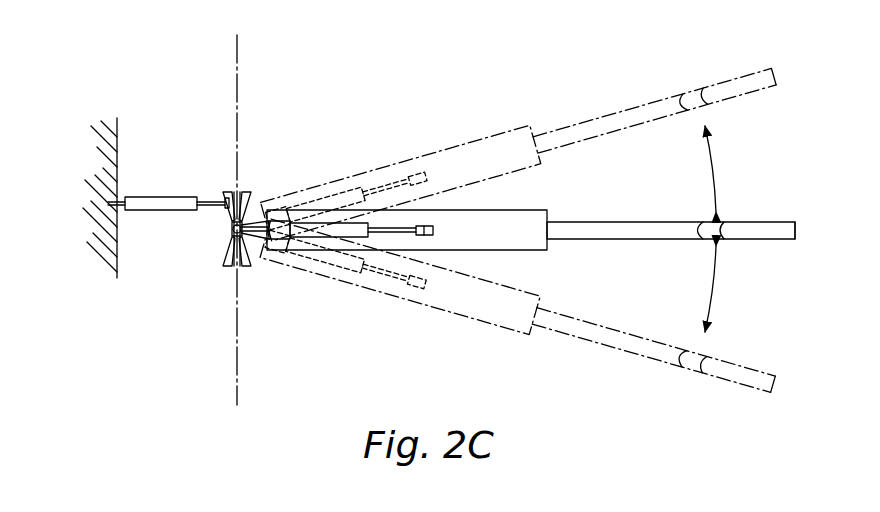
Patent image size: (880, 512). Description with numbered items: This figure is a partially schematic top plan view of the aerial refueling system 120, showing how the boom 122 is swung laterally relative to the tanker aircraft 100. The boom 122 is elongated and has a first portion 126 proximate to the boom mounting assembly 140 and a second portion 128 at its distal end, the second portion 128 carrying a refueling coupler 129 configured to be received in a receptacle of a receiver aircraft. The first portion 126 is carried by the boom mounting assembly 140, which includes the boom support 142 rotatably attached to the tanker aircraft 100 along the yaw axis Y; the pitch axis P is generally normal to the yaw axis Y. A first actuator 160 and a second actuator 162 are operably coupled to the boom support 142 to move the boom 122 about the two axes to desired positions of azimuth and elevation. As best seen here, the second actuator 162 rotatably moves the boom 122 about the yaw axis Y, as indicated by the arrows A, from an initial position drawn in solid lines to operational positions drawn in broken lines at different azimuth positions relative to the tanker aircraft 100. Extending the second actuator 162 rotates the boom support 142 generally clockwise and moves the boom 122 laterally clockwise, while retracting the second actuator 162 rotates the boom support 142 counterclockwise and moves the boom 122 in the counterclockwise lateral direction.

The tanker aircraft 100 is at (100, 188).
The pitch axis P is at (236, 62).
The yaw axis Y is at (224, 238).
The arrows A is at (712, 229).
The aerial refueling system 120 is at (553, 209).
The boom 122 is at (607, 233).
The first portion of the boom 126 is at (322, 207).
The second portion of the boom 128 is at (740, 210).
The refueling coupler 129 is at (802, 238).
The boom mounting assembly 140 is at (553, 230).
The boom support 142 is at (233, 193).
The first actuator 160 is at (343, 237).
The second actuator 162 is at (178, 200).